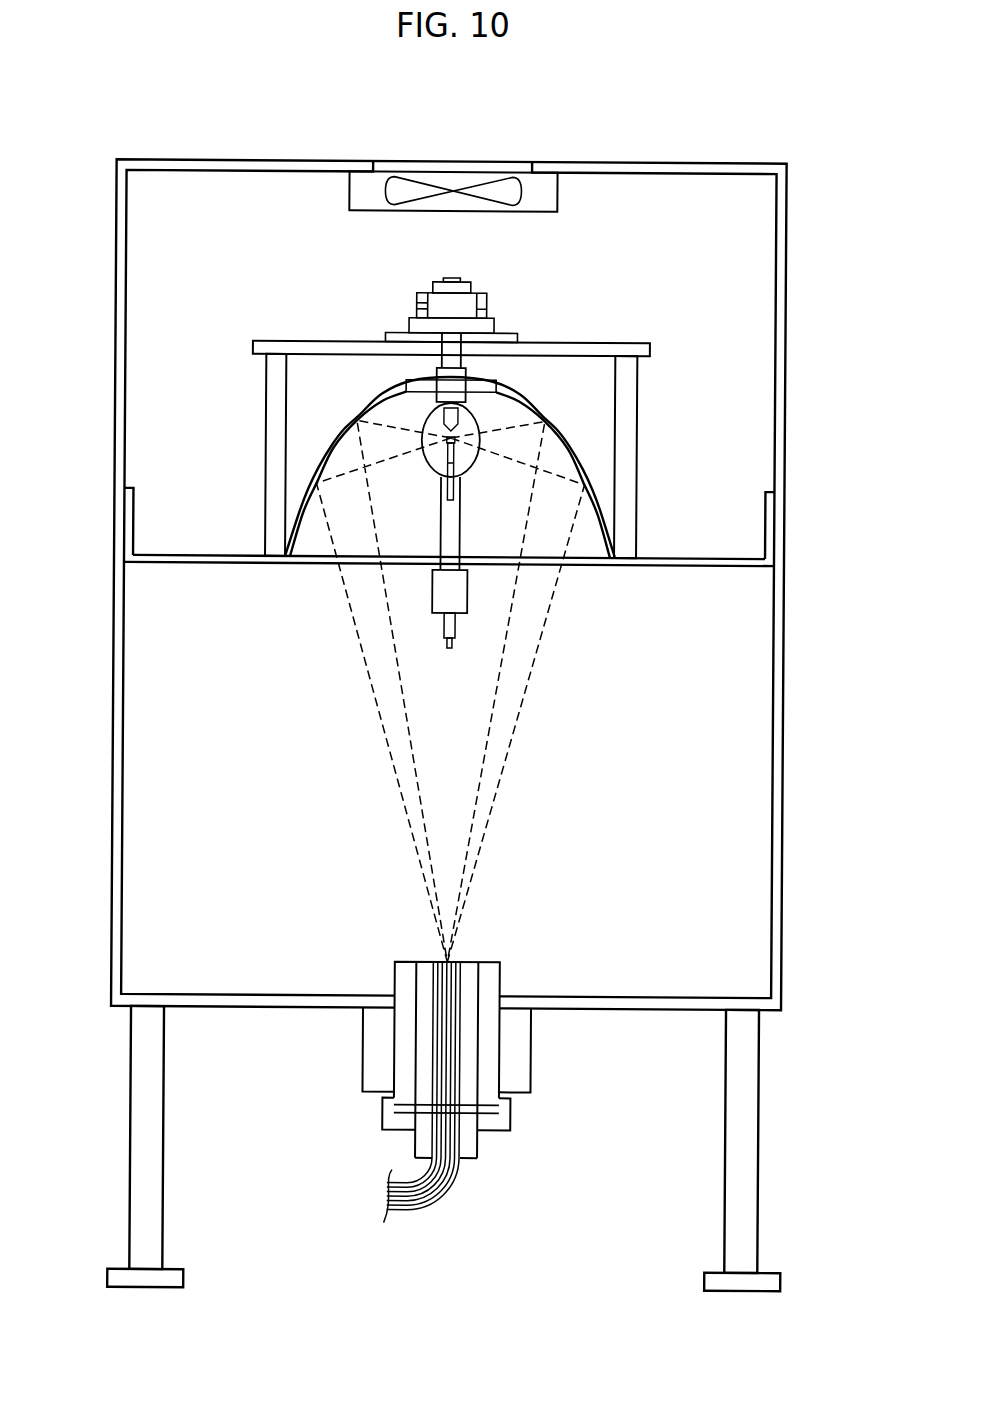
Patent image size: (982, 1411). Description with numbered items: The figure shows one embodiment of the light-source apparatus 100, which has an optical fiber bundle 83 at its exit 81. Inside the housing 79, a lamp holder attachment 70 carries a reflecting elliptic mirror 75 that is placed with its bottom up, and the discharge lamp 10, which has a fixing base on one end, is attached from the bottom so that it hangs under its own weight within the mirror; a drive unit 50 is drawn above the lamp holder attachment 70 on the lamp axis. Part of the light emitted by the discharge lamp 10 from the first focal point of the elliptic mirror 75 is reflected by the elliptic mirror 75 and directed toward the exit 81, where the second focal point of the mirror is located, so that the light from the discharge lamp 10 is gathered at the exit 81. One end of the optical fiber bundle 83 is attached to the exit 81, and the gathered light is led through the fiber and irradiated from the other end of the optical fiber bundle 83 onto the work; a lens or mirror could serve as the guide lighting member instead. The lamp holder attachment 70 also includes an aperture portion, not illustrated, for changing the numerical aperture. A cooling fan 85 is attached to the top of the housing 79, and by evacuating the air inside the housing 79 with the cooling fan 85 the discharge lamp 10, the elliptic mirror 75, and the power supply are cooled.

The light-source apparatus 100 is at (91, 82).
The discharge lamp 10 is at (468, 580).
The motor / rotation drive unit 50 is at (485, 300).
The lamp holder attachment 70 is at (637, 460).
The elliptic mirror 75 is at (324, 441).
The housing 79 is at (784, 518).
The exit 81 is at (534, 1069).
The optical fiber bundle 83 is at (449, 1194).
The cooling fan 85 is at (532, 187).